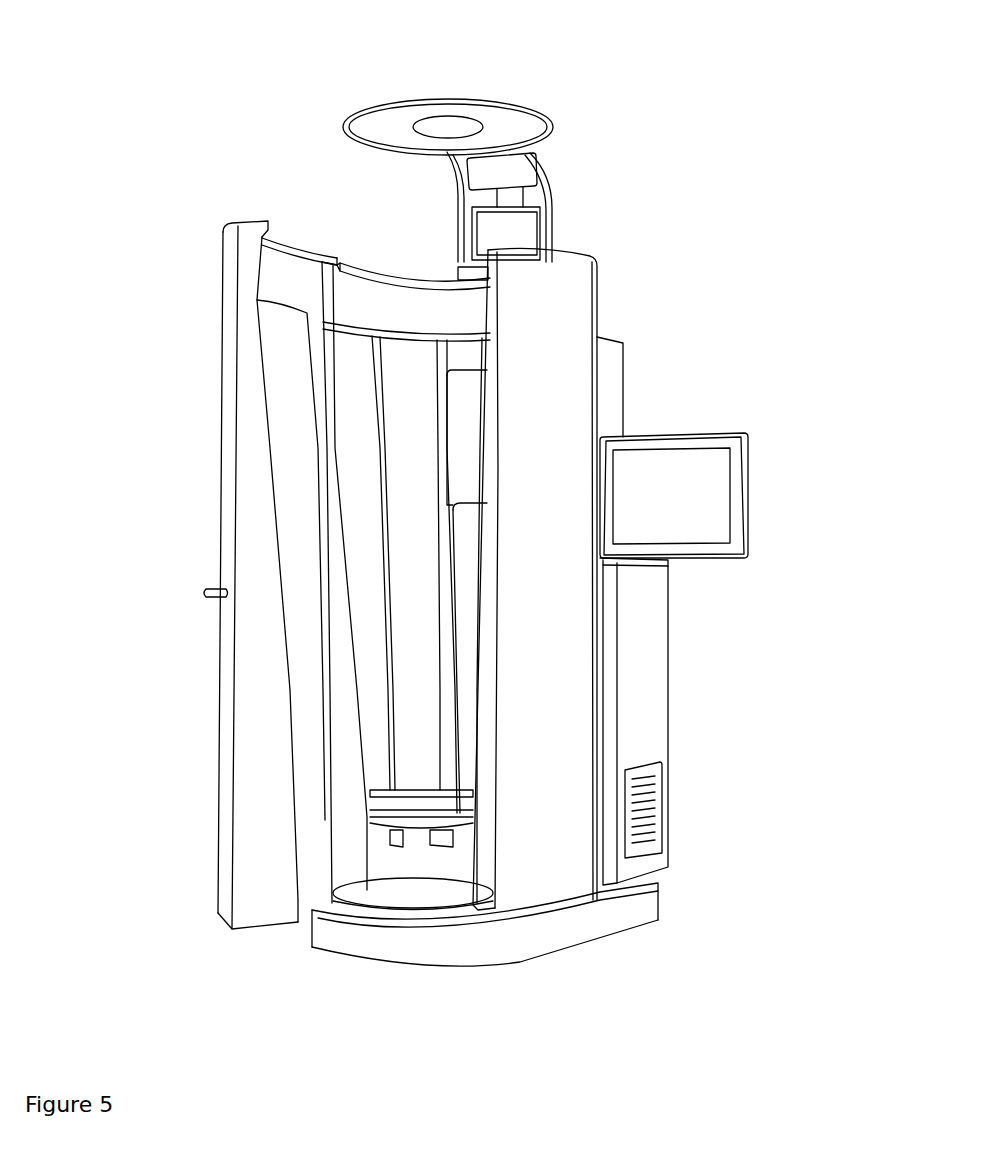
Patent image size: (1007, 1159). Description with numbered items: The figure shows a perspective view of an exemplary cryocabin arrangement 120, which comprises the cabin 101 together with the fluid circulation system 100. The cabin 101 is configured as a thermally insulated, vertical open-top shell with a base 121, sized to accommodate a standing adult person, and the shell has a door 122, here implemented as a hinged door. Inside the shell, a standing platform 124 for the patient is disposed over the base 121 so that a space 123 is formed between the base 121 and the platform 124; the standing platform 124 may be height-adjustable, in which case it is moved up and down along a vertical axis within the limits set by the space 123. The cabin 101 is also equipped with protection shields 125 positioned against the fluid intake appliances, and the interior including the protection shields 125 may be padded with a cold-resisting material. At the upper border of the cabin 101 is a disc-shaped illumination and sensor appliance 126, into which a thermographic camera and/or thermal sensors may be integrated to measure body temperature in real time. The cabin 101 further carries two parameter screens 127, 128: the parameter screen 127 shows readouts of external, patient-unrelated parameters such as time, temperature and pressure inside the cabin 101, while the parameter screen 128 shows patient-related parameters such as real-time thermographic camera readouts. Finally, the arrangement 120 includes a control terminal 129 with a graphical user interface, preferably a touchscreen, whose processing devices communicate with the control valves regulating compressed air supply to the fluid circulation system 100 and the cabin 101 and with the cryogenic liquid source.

The fluid circulation system 100 is at (689, 611).
The cabin 101 is at (337, 499).
The cryocabin arrangement 120 is at (92, 33).
The base 121 is at (499, 967).
The door 122 is at (211, 575).
The interspace between the base and a patient platform 123 is at (452, 969).
The standing platform 124 is at (302, 846).
The protection shields 125 is at (583, 579).
The illumination and sensor appliance 126 is at (494, 98).
The parameter screen 127 is at (575, 150).
The parameter screen 128 is at (566, 216).
The control terminal 129 is at (738, 469).